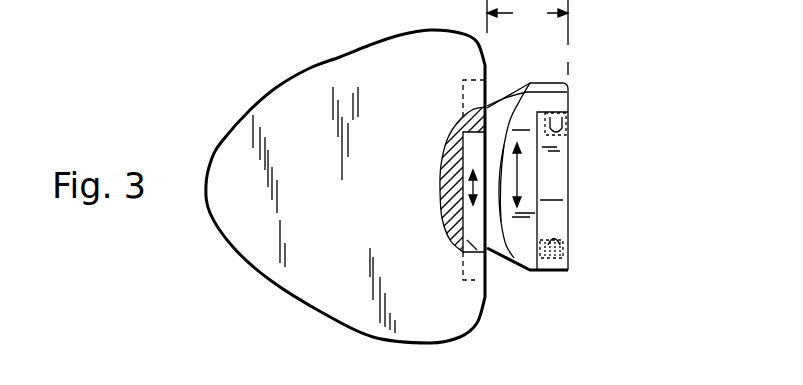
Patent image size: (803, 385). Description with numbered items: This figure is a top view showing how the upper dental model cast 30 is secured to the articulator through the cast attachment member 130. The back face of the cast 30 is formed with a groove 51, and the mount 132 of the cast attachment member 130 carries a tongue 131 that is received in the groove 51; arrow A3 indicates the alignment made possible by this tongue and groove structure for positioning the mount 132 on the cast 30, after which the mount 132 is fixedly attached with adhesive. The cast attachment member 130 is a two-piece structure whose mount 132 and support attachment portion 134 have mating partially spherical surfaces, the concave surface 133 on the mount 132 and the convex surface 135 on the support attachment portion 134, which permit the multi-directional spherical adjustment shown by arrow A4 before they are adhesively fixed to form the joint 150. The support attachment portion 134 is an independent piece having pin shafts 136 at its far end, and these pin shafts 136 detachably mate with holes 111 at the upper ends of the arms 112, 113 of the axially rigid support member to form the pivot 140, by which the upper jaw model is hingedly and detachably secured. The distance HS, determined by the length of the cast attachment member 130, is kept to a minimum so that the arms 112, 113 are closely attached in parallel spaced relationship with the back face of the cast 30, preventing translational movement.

The upper dental model cast 30 is at (288, 95).
The tongue 131 is at (452, 132).
The joint 150 is at (263, 261).
The concave spherical surface 133 is at (474, 246).
The convex spherical surface 135 is at (474, 246).
The alignment arrow A3 is at (463, 181).
The multi-directional alignment arrow A4 is at (517, 180).
The groove 51 is at (487, 105).
The cast attachment member 130 is at (530, 83).
The mount 132 is at (498, 255).
The support attachment portion 134 is at (515, 238).
The arm 113 is at (569, 118).
The arm 112 is at (569, 254).
The pivot 140 is at (640, 185).
The holes 111 is at (553, 185).
The pin shafts 136 is at (554, 128).
The spacing distance HS is at (527, 37).